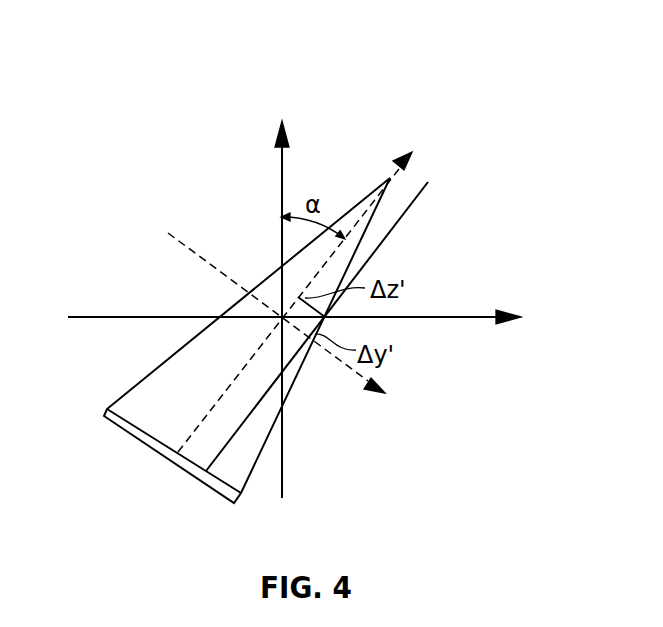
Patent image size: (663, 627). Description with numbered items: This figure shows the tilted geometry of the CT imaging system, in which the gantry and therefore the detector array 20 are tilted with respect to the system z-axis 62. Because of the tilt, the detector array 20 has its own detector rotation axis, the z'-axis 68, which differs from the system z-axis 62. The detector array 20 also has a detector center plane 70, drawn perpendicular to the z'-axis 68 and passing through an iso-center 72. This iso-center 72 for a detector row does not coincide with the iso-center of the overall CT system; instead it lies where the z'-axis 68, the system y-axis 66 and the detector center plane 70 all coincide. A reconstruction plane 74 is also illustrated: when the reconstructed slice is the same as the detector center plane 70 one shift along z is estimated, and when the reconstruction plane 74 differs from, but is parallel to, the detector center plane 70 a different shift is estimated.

The detector array 20 is at (143, 442).
The system z-axis 62 is at (432, 316).
The system y-axis 66 is at (282, 197).
The z'-axis 68 is at (344, 364).
The detector center plane 70 is at (229, 384).
The iso-center 72 is at (280, 315).
The reconstruction plane 74 is at (395, 226).